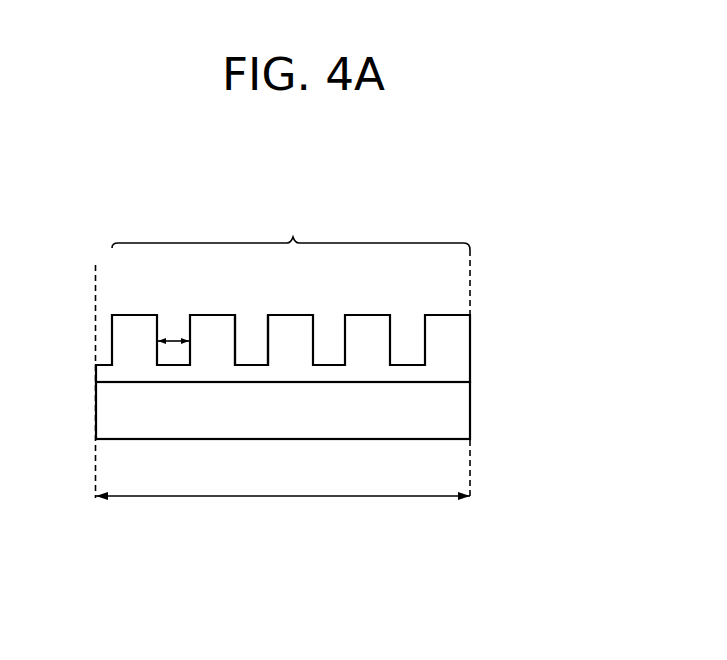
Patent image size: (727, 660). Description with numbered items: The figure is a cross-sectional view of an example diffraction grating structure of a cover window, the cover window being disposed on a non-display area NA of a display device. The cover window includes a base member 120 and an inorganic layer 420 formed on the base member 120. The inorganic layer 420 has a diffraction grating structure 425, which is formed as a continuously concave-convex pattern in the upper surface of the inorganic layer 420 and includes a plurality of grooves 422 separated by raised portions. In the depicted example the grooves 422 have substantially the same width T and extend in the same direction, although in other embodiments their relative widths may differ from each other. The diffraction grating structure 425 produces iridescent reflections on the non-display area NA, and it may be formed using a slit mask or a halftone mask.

The inorganic layer 420 is at (457, 340).
The base member 120 is at (457, 412).
The groove 422 is at (251, 336).
The diffraction grating structure 425 is at (291, 231).
The width T is at (173, 341).
The non-display area NA is at (283, 483).